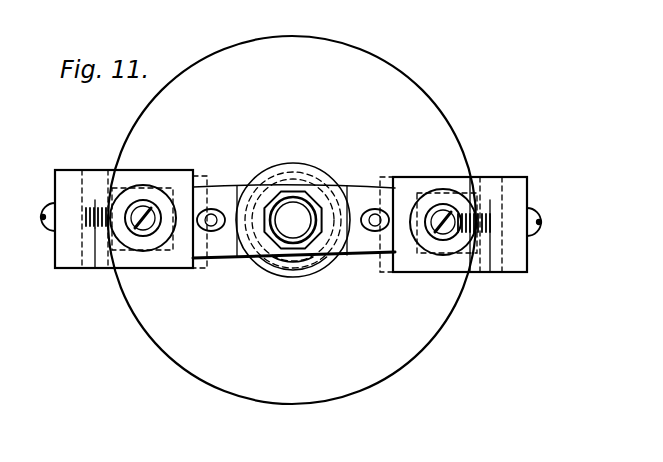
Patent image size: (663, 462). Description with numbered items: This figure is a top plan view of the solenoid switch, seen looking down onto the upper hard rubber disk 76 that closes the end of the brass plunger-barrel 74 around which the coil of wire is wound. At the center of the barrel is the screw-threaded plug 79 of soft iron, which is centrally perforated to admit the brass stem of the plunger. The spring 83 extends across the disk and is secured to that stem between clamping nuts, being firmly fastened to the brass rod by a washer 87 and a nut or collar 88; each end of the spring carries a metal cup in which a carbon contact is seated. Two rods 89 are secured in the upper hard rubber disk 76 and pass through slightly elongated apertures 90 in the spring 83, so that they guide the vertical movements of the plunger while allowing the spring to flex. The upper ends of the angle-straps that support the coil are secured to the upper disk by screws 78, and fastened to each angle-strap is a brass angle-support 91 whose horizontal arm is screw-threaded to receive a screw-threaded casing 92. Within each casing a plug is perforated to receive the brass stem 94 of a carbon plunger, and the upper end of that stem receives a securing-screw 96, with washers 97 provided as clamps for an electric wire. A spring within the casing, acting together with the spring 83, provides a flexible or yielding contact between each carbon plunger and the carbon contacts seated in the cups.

The plunger-barrel 74 is at (301, 270).
The hard rubber disk 76 is at (292, 220).
The screws 78 is at (95, 250).
The screw-threaded plug 79 is at (268, 262).
The spring 83 is at (227, 195).
The washer 87 is at (266, 262).
The nut or collar 88 is at (320, 262).
The rods 89 is at (211, 209).
The elongated apertures 90 is at (212, 232).
The brass angle-support 91 is at (73, 250).
The screw-threaded casing 92 is at (130, 185).
The brass stem 94 is at (140, 212).
The securing-screw 96 is at (163, 193).
The washers 97 is at (143, 237).